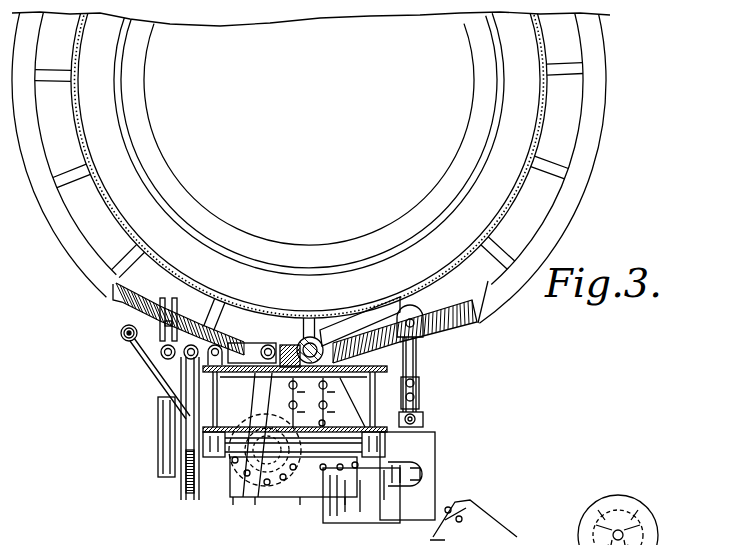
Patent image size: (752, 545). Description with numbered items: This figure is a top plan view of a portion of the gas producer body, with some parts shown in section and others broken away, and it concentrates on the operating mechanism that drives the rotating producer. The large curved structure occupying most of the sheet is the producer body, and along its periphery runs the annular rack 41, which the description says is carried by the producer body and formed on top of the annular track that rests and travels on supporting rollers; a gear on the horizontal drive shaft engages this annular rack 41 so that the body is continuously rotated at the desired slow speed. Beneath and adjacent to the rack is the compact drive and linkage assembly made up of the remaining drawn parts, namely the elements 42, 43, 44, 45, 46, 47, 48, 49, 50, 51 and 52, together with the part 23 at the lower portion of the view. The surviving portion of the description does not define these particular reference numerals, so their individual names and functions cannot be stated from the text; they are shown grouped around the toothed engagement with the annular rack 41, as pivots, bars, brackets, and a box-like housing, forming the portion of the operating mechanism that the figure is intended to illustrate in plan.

The annular rack 41 is at (466, 333).
The lever 42 is at (259, 445).
The frame 43 is at (262, 378).
The bracket 44 is at (240, 352).
The toothed gear segment 45 is at (168, 300).
The pivot pin 46 is at (208, 418).
The rack bar 47 is at (190, 498).
The shaft 48 is at (315, 470).
The housing 49 is at (436, 439).
The connecting rod 50 is at (418, 390).
The arm 51 is at (362, 323).
The pinion 52 is at (313, 338).
The motor 23 is at (371, 486).